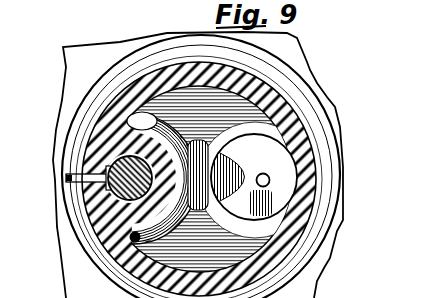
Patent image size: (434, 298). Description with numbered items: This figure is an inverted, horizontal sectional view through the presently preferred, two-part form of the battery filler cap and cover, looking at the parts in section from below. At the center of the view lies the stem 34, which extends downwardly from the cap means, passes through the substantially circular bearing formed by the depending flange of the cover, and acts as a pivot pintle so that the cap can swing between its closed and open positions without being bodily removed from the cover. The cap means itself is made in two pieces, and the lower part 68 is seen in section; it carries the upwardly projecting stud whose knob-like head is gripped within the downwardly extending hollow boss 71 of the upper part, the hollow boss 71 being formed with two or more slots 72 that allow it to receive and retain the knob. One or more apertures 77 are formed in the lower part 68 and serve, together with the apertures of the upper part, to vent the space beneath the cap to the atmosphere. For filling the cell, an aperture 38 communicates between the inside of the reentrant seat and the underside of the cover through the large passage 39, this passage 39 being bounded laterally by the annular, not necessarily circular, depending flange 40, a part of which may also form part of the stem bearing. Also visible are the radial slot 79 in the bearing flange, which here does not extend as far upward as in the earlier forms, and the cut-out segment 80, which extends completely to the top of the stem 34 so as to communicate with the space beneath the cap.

The stem 34 is at (107, 147).
The aperture 38 is at (263, 174).
The passage 39 is at (282, 85).
The flange 40 is at (296, 110).
The lower part 68 is at (273, 203).
The hollow boss 71 is at (207, 232).
The slots 72 is at (198, 138).
The apertures 77 is at (264, 187).
The radial slot 79 is at (66, 180).
The cut-out segment 80 is at (90, 198).